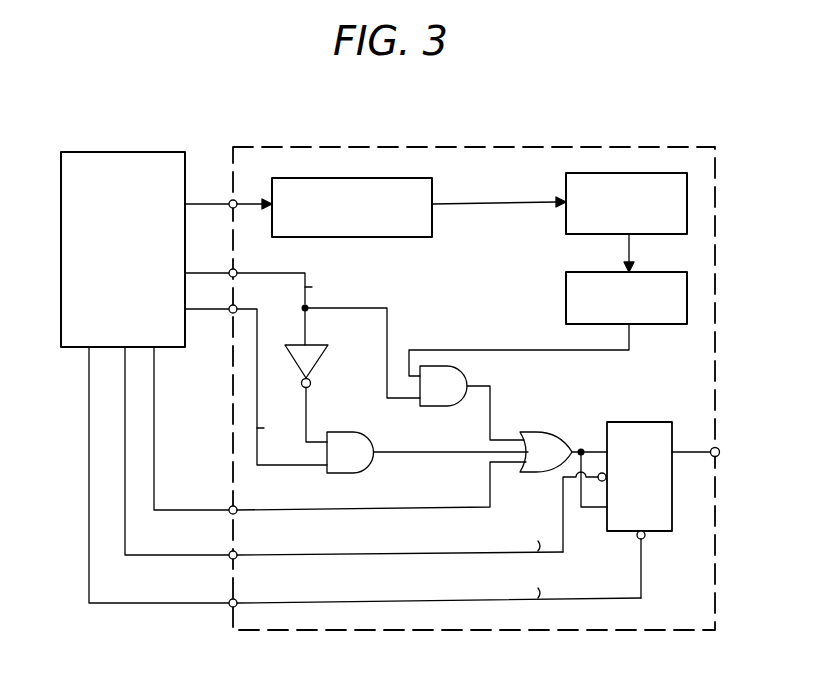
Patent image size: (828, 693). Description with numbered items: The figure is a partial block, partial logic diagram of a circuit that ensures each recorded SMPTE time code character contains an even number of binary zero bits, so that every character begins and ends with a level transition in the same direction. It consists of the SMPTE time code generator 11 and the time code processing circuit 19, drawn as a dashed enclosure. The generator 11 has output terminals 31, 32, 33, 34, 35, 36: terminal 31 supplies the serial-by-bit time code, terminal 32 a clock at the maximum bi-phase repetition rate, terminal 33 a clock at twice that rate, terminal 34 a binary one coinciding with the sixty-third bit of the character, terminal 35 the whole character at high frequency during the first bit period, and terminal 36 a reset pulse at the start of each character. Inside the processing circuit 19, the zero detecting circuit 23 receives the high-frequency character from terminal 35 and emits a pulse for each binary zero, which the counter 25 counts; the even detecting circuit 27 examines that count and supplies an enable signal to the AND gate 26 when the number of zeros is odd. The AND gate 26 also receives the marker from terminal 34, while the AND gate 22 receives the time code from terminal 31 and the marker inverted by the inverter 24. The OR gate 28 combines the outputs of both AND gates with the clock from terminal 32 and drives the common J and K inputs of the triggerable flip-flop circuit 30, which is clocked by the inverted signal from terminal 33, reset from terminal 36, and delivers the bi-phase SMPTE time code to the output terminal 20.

The SMPTE time code generator 11 is at (108, 163).
The time code processing circuit 19 is at (496, 151).
The output terminal 20 is at (719, 455).
The AND gate 22 is at (369, 469).
The "0" detecting circuit 23 is at (376, 238).
The inverter 24 is at (314, 358).
The counter 25 is at (576, 184).
The AND gate 26 is at (447, 404).
The even detecting circuit 27 is at (570, 291).
The OR gate 28 is at (560, 432).
The triggerable flip-flop circuit 30 is at (651, 428).
The output terminal 31 is at (230, 312).
The output terminal 32 is at (230, 507).
The output terminal 33 is at (230, 552).
The output terminal 34 is at (231, 271).
The output terminal 35 is at (230, 202).
The output terminal 36 is at (230, 607).